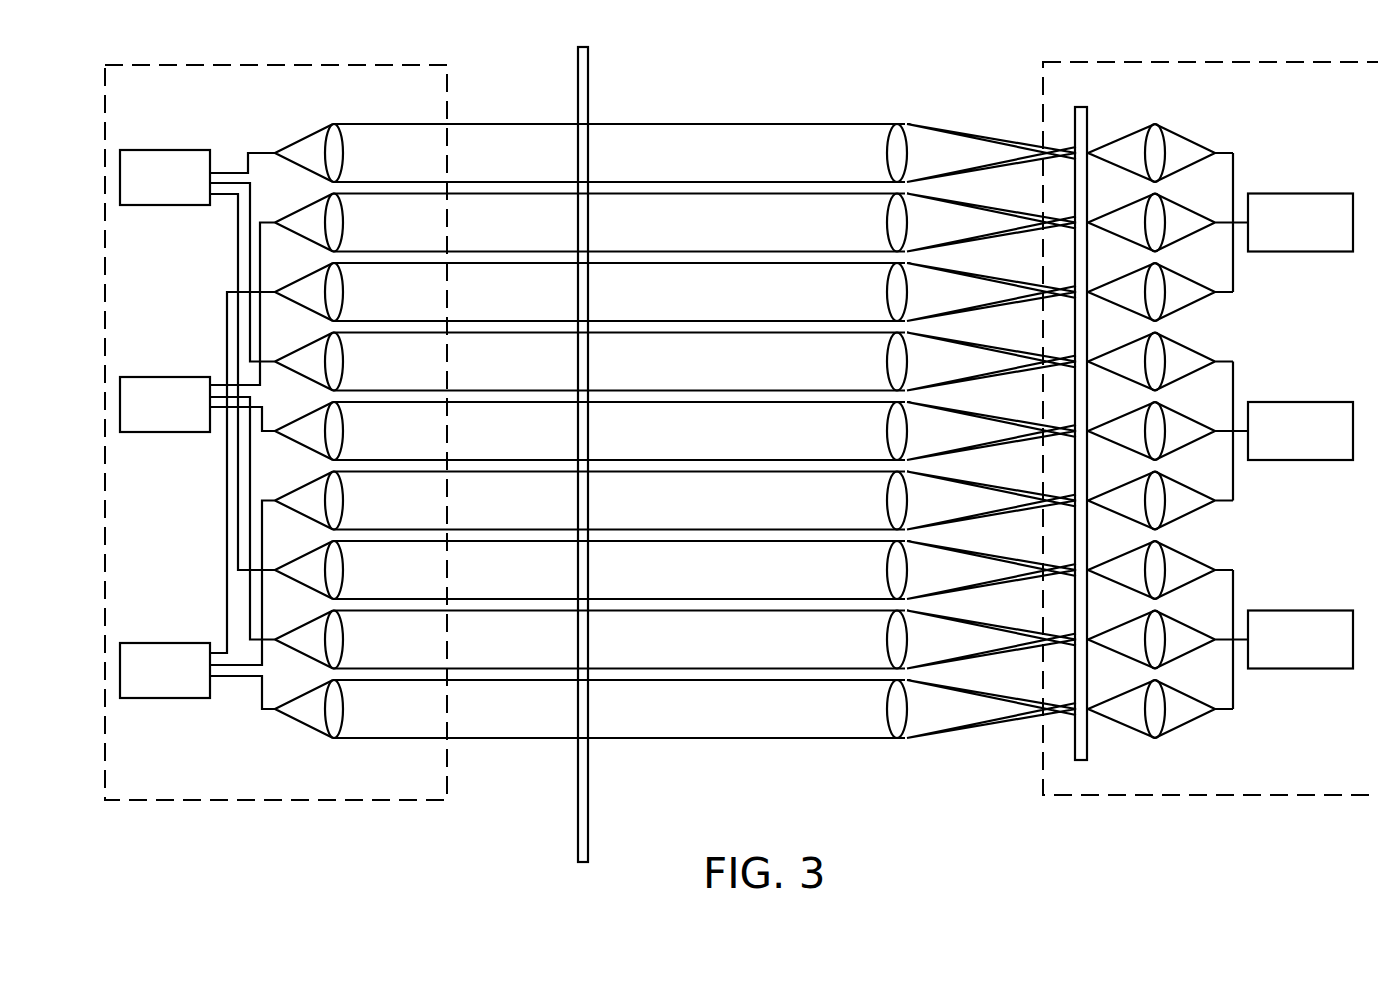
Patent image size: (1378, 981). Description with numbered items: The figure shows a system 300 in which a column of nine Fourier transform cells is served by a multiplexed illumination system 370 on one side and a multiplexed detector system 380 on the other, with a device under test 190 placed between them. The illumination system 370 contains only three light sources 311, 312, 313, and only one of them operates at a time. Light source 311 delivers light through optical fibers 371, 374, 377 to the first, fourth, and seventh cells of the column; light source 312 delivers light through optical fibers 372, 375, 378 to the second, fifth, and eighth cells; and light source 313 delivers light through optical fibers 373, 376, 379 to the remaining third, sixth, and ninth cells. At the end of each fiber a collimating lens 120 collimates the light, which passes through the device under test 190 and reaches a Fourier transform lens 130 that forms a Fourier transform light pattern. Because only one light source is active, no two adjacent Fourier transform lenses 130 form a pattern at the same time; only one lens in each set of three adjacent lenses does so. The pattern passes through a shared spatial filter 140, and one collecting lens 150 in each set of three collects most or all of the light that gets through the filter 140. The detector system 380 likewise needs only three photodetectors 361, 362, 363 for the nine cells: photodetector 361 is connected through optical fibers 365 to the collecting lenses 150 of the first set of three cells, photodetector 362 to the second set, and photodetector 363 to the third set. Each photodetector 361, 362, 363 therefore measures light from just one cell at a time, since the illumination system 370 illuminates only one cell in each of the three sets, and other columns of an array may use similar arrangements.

The system 300 is at (858, 58).
The light source 311 is at (186, 150).
The light source 312 is at (186, 377).
The light source 313 is at (186, 643).
The collimating lens 120 is at (343, 167).
The Fourier transform lens 130 is at (896, 124).
The spatial filter 140 is at (1082, 107).
The collecting lens 150 is at (1146, 169).
The device under test 190 is at (589, 82).
The photodetector 361 is at (1305, 193).
The photodetector 362 is at (1305, 402).
The photodetector 363 is at (1305, 610).
The optical fibers 365 is at (1234, 166).
The illumination system 370 is at (285, 65).
The optical fiber 371 is at (250, 153).
The optical fiber 372 is at (261, 284).
The optical fiber 373 is at (226, 527).
The optical fiber 374 is at (251, 218).
The optical fiber 375 is at (263, 422).
The optical fiber 376 is at (262, 652).
The optical fiber 377 is at (237, 258).
The optical fiber 378 is at (251, 487).
The optical fiber 379 is at (262, 700).
The detector system 380 is at (1220, 62).